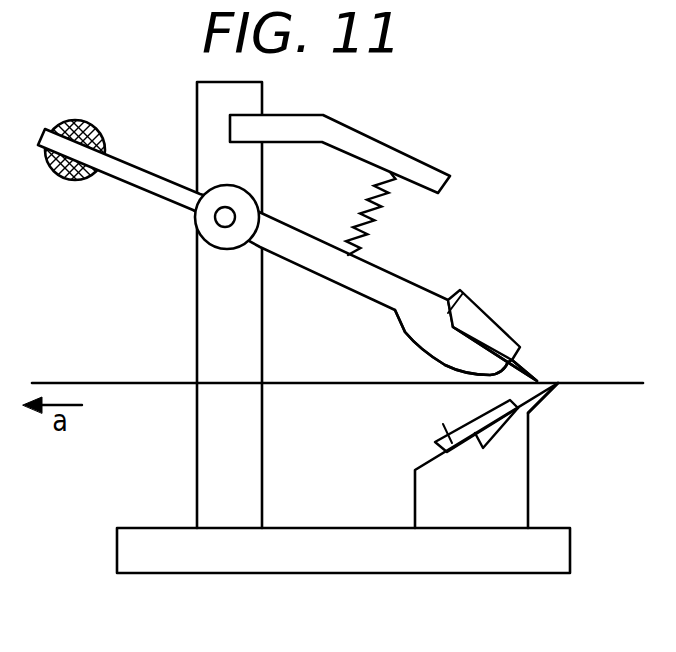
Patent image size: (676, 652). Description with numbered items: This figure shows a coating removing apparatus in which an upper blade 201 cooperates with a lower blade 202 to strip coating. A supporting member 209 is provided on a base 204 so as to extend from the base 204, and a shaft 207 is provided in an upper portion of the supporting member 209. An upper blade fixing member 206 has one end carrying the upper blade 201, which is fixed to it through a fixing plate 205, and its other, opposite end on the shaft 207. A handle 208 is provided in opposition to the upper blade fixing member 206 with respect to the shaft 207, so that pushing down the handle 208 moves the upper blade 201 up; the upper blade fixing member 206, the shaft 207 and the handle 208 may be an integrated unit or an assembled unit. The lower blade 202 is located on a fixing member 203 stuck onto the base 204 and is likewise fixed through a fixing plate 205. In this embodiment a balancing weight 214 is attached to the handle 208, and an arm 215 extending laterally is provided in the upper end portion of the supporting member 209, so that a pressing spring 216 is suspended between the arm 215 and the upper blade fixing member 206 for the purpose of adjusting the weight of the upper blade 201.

The upper blade 201 is at (534, 371).
The lower blade 202 is at (543, 410).
The fixing member 203 is at (518, 493).
The base 204 is at (423, 565).
The fixing plate 205 is at (503, 333).
The upper blade fixing member 206 is at (416, 296).
The shaft 207 is at (216, 226).
The handle 208 is at (128, 177).
The supporting member 209 is at (198, 420).
The balancing weight 214 is at (82, 121).
The arm 215 is at (362, 138).
The tension spring 216 is at (377, 238).